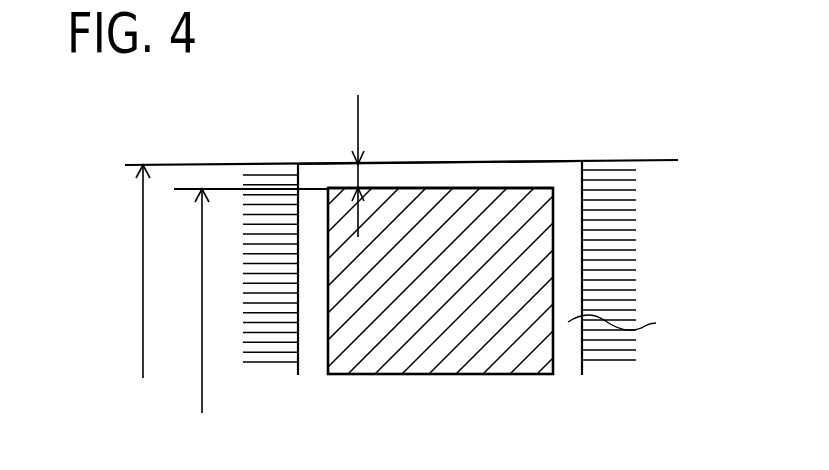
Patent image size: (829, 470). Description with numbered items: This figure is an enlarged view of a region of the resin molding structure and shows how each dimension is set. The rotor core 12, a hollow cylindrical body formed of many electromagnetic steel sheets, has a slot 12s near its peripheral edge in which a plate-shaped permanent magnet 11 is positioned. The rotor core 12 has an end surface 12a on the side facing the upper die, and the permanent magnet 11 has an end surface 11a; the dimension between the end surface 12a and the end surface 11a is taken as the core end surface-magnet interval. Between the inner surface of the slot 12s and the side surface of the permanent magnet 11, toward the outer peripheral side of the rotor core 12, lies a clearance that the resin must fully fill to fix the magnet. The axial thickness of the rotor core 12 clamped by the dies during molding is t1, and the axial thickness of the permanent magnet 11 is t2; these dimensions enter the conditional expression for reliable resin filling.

The permanent magnet 11 is at (473, 233).
The end surface of the permanent magnet 11a is at (525, 188).
The rotor core 12 is at (613, 243).
The end surface of the rotor core 12a is at (273, 163).
The slot 12s is at (435, 172).
The axial dimension of the rotor core t1 is at (133, 271).
The axial dimension of the permanent magnets t2 is at (191, 301).